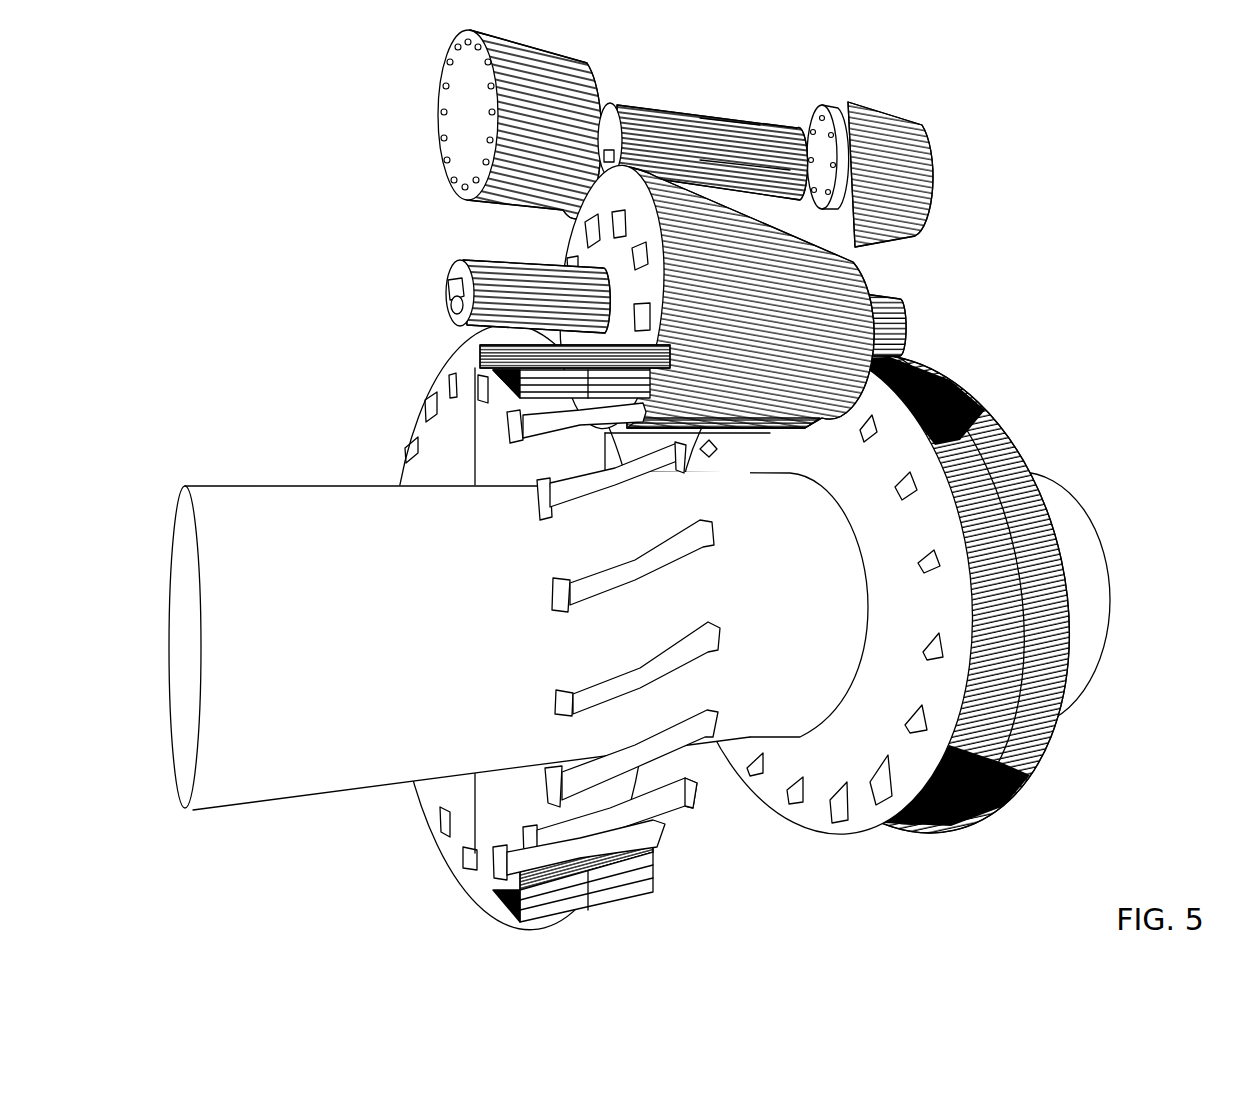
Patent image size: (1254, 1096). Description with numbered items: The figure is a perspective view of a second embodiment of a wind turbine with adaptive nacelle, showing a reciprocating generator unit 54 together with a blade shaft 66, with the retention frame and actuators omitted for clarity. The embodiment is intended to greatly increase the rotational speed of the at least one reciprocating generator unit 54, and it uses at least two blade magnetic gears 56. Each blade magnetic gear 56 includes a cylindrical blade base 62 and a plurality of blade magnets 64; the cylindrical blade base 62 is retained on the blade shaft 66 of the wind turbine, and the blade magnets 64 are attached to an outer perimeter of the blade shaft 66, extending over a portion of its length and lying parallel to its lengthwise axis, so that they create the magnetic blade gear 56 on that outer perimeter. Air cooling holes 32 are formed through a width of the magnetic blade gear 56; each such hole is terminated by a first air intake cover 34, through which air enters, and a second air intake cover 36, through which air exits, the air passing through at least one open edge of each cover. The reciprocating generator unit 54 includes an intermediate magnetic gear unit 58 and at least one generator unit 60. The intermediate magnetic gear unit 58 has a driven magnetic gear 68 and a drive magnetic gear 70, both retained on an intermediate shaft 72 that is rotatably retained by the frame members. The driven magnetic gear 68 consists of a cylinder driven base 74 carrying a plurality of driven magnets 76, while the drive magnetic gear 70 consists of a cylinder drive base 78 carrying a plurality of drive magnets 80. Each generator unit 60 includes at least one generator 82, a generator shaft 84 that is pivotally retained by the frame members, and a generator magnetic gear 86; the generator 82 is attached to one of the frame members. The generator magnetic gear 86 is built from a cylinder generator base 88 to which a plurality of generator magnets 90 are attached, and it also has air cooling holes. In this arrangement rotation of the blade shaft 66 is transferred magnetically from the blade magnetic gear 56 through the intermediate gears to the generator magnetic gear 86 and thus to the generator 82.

The air-cooling holes 32 is at (435, 823).
The first air intake cover 34 is at (522, 853).
The second air intake cover 36 is at (697, 801).
The reciprocating generator unit 54 is at (965, 197).
The blade magnetic gear 56 is at (405, 393).
The intermediate magnetic gear unit 58 is at (412, 240).
The generator unit 60 is at (838, 72).
The cylindrical blade base 62 is at (858, 816).
The blade magnets 64 is at (982, 791).
The blade shaft 66 is at (268, 782).
The driven magnetic gear 68 is at (468, 250).
The drive magnetic gear 70 is at (905, 278).
The intermediate shaft 72 is at (445, 293).
The cylinder driven base 74 is at (450, 311).
The driven magnets 76 is at (505, 250).
The cylinder drive base 78 is at (738, 118).
The drive magnets 80 is at (860, 263).
The generator 82 is at (480, 82).
The generator shaft 84 is at (875, 114).
The generator magnetic gear 86 is at (770, 84).
The cylinder generator base 88 is at (640, 112).
The generator magnets 90 is at (705, 102).